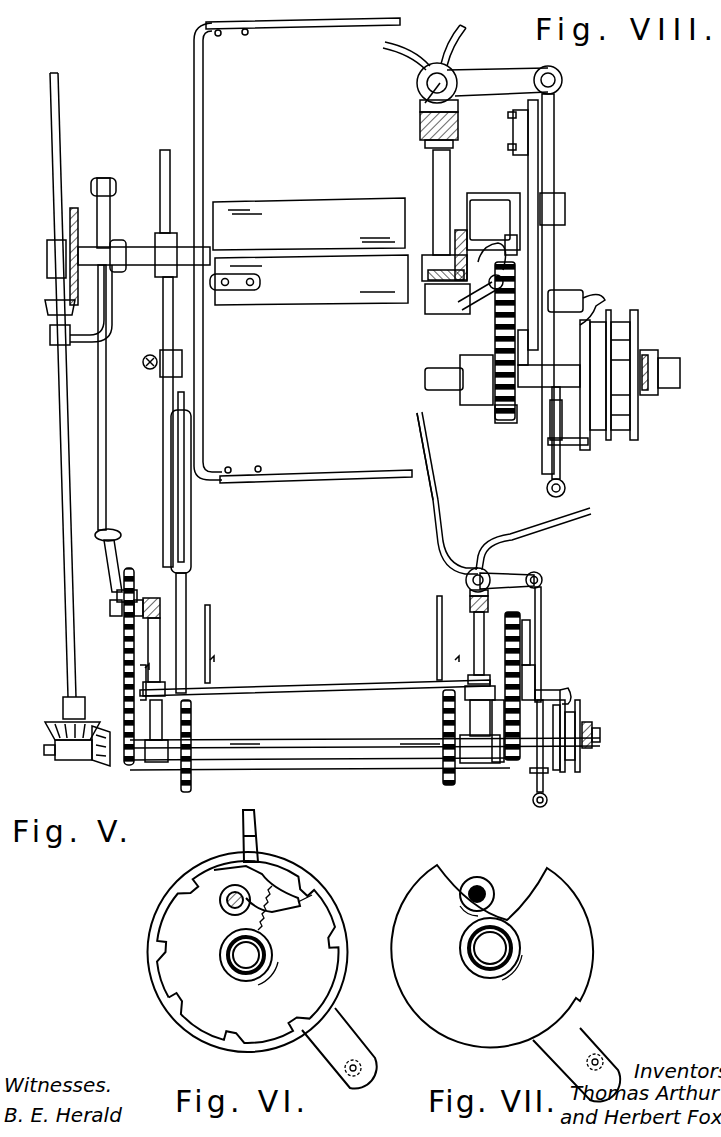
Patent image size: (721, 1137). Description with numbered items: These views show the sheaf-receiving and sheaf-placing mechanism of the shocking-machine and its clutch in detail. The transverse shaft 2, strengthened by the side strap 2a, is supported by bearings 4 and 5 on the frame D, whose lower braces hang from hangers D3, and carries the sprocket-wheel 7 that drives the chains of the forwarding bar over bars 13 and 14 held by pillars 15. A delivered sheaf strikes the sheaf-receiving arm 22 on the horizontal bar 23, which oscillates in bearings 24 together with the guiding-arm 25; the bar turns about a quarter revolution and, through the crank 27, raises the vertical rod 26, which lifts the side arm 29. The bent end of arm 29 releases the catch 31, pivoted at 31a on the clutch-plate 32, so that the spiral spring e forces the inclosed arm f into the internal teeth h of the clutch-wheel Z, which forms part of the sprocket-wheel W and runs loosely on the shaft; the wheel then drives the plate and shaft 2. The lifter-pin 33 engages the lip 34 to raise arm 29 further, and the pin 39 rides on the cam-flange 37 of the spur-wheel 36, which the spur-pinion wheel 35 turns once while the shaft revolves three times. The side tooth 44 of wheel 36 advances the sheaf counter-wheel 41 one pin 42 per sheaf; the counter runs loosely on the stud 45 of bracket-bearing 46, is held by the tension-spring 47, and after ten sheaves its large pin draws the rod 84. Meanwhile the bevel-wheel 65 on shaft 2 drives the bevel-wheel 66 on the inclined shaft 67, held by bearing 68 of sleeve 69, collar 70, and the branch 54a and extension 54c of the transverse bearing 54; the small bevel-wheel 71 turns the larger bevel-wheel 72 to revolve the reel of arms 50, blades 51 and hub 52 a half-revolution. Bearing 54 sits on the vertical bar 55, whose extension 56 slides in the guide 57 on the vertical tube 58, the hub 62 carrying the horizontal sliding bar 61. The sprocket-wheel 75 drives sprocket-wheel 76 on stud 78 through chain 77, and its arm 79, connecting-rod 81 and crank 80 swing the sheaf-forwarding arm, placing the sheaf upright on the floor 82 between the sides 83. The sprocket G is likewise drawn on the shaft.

In FIG. 5, the transverse shaft 2 is at (328, 740).
In FIG. 8, the transverse shaft 2 is at (425, 378).
In FIG. 5, the side strap 2a is at (592, 722).
In FIG. 8, the side strap 2a is at (650, 352).
In FIG. 5, the bearing 4 is at (490, 763).
In FIG. 8, the bearing 4 is at (466, 404).
In FIG. 5, the bearing 5 is at (156, 762).
In FIG. 5, the sprocket-wheel 7 is at (192, 781).
In FIG. 5, the horizontal bar 13 is at (470, 605).
In FIG. 8, the horizontal bar 13 is at (420, 134).
In FIG. 5, the horizontal bar 14 is at (148, 598).
In FIG. 5, the pillar 15 is at (148, 632).
In FIG. 8, the pillar 15 is at (433, 171).
In FIG. 5, the sheaf-receiving arm 22 is at (424, 453).
In FIG. 8, the sheaf-receiving arm 22 is at (417, 84).
In FIG. 5, the horizontal bar 23 is at (489, 592).
In FIG. 8, the horizontal bar 23 is at (425, 103).
In FIG. 5, the bearing 24 is at (466, 580).
In FIG. 8, the bearing 24 is at (458, 106).
In FIG. 5, the guiding-arm 25 is at (558, 516).
In FIG. 8, the guiding-arm 25 is at (456, 34).
In FIG. 5, the vertical rod 26 is at (541, 600).
In FIG. 8, the vertical rod 26 is at (554, 174).
In FIG. 5, the crank 27 is at (518, 576).
In FIG. 8, the crank 27 is at (500, 74).
In FIG. 5, the side arm 29 is at (545, 692).
In FIG. 8, the side arm 29 is at (568, 300).
In FIG. 5, the catch 31 is at (570, 690).
In FIG. 8, the catch 31 is at (598, 298).
In FIG. 6, the catch 31 is at (244, 831).
In FIG. 6, the pivot 31a is at (222, 904).
In FIG. 7, the pivot 31a is at (480, 890).
In FIG. 5, the clutch-plate 32 is at (556, 770).
In FIG. 8, the clutch-plate 32 is at (586, 450).
In FIG. 6, the clutch-plate 32 is at (166, 992).
In FIG. 7, the clutch-plate 32 is at (392, 948).
In FIG. 5, the lifter-pin 33 is at (534, 773).
In FIG. 8, the lifter-pin 33 is at (548, 441).
In FIG. 6, the lifter-pin 33 is at (362, 1068).
In FIG. 7, the lifter-pin 33 is at (605, 1058).
In FIG. 8, the lip 34 is at (564, 420).
In FIG. 5, the spur-pinion wheel 35 is at (504, 760).
In FIG. 8, the spur-pinion wheel 35 is at (500, 412).
In FIG. 5, the spur-wheel 36 is at (510, 650).
In FIG. 8, the spur-wheel 36 is at (494, 320).
In FIG. 5, the cam-flange 37 is at (534, 670).
In FIG. 8, the cam-flange 37 is at (522, 388).
In FIG. 8, the pin 39 is at (526, 388).
In FIG. 8, the sheaf counter-wheel 41 is at (538, 140).
In FIG. 8, the teeth or pins 42 is at (513, 140).
In FIG. 5, the side-extending tooth 44 is at (530, 648).
In FIG. 8, the side-extending tooth 44 is at (517, 248).
In FIG. 8, the stud 45 is at (565, 208).
In FIG. 8, the bracket-bearing 46 is at (482, 198).
In FIG. 8, the tension-spring 47 is at (488, 300).
In FIG. 5, the reel-arms 50 is at (200, 81).
In FIG. 5, the blades 51 is at (305, 25).
In FIG. 5, the hub 52 is at (174, 268).
In FIG. 5, the transverse bearing 54 is at (148, 262).
In FIG. 5, the lower branch 54a is at (111, 321).
In FIG. 5, the upper extension 54c is at (48, 254).
In FIG. 5, the vertical bar 55 is at (161, 167).
In FIG. 5, the lower end extension 56 is at (190, 561).
In FIG. 5, the guide 57 is at (190, 408).
In FIG. 5, the vertical tube 58 is at (186, 588).
In FIG. 5, the horizontal sliding bar 61 is at (150, 370).
In FIG. 5, the hub 62 is at (164, 352).
In FIG. 5, the bevel-wheel 65 is at (106, 766).
In FIG. 5, the bevel-wheel 66 is at (46, 728).
In FIG. 5, the inclined shaft 67 is at (52, 124).
In FIG. 5, the bearing 68 is at (63, 702).
In FIG. 5, the sleeve 69 is at (62, 758).
In FIG. 5, the collar 70 is at (44, 750).
In FIG. 5, the small bevel-wheel 71 is at (45, 308).
In FIG. 5, the larger bevel-wheel 72 is at (76, 210).
In FIG. 5, the sprocket-wheel 75 is at (124, 735).
In FIG. 5, the sprocket-wheel 76 is at (118, 584).
In FIG. 5, the sprocket-chain 77 is at (140, 685).
In FIG. 5, the stud 78 is at (111, 606).
In FIG. 5, the arm 79 is at (114, 557).
In FIG. 5, the crank 80 is at (104, 180).
In FIG. 5, the connecting-rod 81 is at (104, 391).
In FIG. 5, the floor 82 is at (322, 683).
In FIG. 5, the sides 83 is at (210, 652).
In FIG. 8, the rod 84 is at (447, 299).
In FIG. 5, the frame D is at (140, 672).
In FIG. 8, the frame D is at (440, 255).
In FIG. 5, the hangers D3 is at (470, 712).
In FIG. 5, the sprocket G is at (444, 776).
In FIG. 5, the clutch-wheel Z is at (566, 770).
In FIG. 8, the clutch-wheel Z is at (610, 440).
In FIG. 6, the clutch-wheel Z is at (152, 956).
In FIG. 5, the sprocket-wheel W is at (582, 770).
In FIG. 8, the sprocket-wheel W is at (636, 440).
In FIG. 6, the internal teeth h is at (160, 956).
In FIG. 6, the spiral spring e is at (270, 909).
In FIG. 6, the inclosed arm f is at (298, 906).